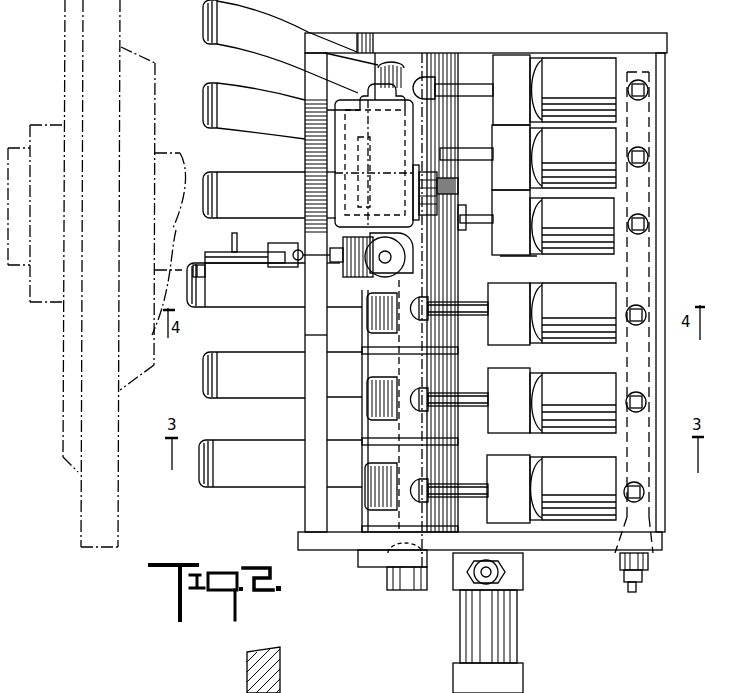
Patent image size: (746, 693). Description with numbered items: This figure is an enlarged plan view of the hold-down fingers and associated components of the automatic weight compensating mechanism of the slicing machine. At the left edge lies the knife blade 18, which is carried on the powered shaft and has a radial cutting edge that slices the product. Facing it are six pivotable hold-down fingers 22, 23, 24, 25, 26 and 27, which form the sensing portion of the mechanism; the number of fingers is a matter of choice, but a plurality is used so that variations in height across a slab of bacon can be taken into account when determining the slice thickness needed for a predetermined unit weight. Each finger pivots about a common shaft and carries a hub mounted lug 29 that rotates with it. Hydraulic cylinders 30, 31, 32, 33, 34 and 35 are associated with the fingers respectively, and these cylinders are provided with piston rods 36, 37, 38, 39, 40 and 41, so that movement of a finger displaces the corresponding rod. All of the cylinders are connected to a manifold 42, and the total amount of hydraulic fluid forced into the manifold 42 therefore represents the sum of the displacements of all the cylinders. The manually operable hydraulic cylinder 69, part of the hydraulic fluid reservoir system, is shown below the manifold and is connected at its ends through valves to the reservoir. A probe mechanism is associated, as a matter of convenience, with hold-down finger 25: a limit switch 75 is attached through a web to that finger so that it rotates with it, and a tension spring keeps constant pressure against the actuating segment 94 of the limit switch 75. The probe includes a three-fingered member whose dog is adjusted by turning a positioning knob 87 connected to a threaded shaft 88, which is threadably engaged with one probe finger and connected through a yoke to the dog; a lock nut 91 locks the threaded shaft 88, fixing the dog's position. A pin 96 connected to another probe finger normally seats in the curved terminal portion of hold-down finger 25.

The knife blade 18 is at (90, 517).
The hold-down finger 22 is at (204, 22).
The hold-down finger 23 is at (204, 108).
The hold-down finger 24 is at (202, 178).
The hold-down finger 25 is at (202, 300).
The hold-down finger 26 is at (202, 375).
The hold-down finger 27 is at (204, 488).
The hub mounted lug 29 is at (370, 325).
The hydraulic cylinder 30 is at (515, 72).
The hydraulic cylinder 31 is at (592, 168).
The hydraulic cylinder 32 is at (592, 232).
The hydraulic cylinder 33 is at (593, 319).
The hydraulic cylinder 34 is at (590, 411).
The hydraulic cylinder 35 is at (590, 501).
The piston rod 36 is at (475, 84).
The piston rod 37 is at (470, 149).
The piston rod 38 is at (479, 219).
The piston rod 39 is at (468, 312).
The piston rod 40 is at (467, 398).
The piston rod 41 is at (466, 488).
The manifold 42 is at (650, 525).
The manually operable hydraulic cylinder 69 is at (510, 634).
The limit switch 75 is at (352, 152).
The positioning knob 87 is at (384, 237).
The threaded shaft 88 is at (297, 250).
The lock nut 91 is at (364, 277).
The actuating segment 94 is at (456, 186).
The pin 96 is at (207, 270).